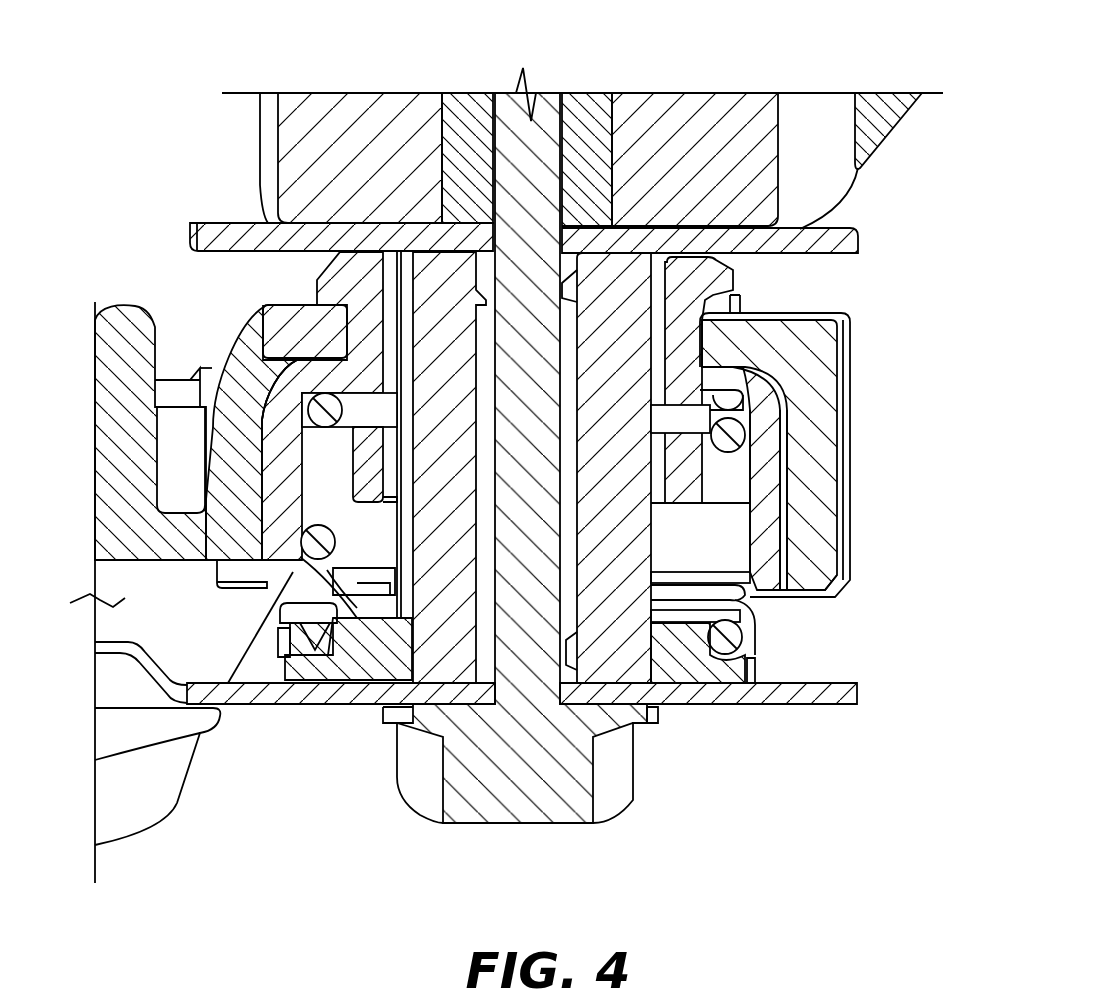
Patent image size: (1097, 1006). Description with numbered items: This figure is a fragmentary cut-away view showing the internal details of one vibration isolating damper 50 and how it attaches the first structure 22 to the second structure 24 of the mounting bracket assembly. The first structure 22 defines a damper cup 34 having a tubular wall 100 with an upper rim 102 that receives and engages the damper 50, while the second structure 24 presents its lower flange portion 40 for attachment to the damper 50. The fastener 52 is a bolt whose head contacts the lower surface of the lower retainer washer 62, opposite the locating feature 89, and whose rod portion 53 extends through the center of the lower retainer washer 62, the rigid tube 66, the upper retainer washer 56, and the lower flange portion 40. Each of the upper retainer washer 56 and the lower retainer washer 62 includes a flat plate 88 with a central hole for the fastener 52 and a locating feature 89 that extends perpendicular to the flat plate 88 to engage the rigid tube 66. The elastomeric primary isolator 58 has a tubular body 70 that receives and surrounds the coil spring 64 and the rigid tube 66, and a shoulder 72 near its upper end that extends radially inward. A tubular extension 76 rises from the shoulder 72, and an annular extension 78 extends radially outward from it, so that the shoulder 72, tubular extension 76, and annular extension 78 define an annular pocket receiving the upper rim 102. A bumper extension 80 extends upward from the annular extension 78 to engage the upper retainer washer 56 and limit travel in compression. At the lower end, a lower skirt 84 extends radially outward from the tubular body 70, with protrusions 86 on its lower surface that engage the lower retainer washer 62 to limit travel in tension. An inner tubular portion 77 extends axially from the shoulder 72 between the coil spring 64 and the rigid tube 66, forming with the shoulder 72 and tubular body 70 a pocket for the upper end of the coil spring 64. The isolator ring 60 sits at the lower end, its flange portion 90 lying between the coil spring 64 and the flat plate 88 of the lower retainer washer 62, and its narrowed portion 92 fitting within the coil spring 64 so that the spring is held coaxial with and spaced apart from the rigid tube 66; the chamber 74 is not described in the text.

The first structure 22 is at (107, 305).
The second structure 24 is at (813, 120).
The damper cup 34 is at (257, 327).
The lower flange portion 40 is at (568, 122).
The vibration isolating damper 50 is at (134, 146).
The fastener 52 is at (460, 826).
The rod portion 53 is at (548, 107).
The upper retainer washer 56 is at (505, 462).
The primary isolator 58 is at (270, 371).
The isolator ring 60 is at (759, 675).
The lower retainer washer 62 is at (858, 683).
The coil spring 64 is at (678, 427).
The rigid tube 66 is at (605, 446).
The tubular body 70 is at (777, 483).
The shoulder 72 is at (742, 372).
The chamber 74 is at (683, 552).
The tubular extension 76 is at (690, 340).
The inner tubular portion 77 is at (360, 465).
The annular extension 78 is at (713, 298).
The bumper extension 80 is at (775, 437).
The lower skirt 84 is at (800, 596).
The protrusions 86 is at (797, 620).
The flat plate 88 is at (245, 230).
The locating feature 89 is at (562, 278).
The flange portion 90 is at (725, 665).
The narrowed portion 92 is at (672, 660).
The tubular wall 100 is at (827, 427).
The upper rim 102 is at (303, 330).